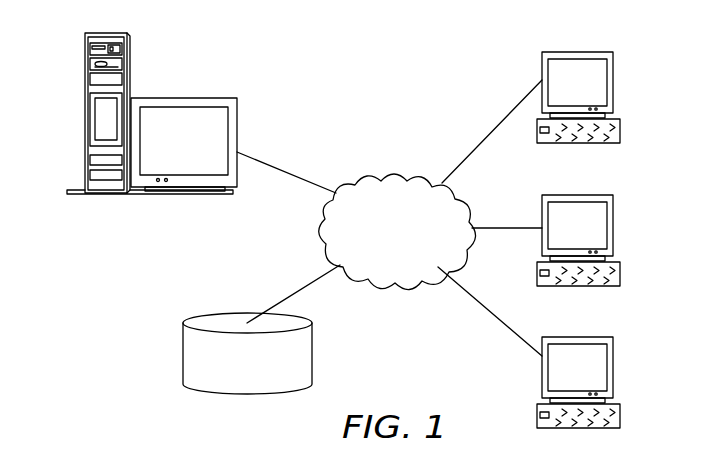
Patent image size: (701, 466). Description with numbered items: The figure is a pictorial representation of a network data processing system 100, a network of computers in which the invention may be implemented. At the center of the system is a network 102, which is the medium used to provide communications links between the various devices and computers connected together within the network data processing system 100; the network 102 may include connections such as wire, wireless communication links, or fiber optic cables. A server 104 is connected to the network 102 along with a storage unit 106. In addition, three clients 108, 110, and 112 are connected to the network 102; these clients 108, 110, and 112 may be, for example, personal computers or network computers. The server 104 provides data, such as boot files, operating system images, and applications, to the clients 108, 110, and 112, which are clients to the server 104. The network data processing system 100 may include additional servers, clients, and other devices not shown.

The network data processing system 100 is at (322, 58).
The network 102 is at (368, 176).
The server 104 is at (84, 114).
The storage unit 106 is at (183, 355).
The client 108 is at (613, 82).
The client 110 is at (613, 228).
The client 112 is at (613, 370).